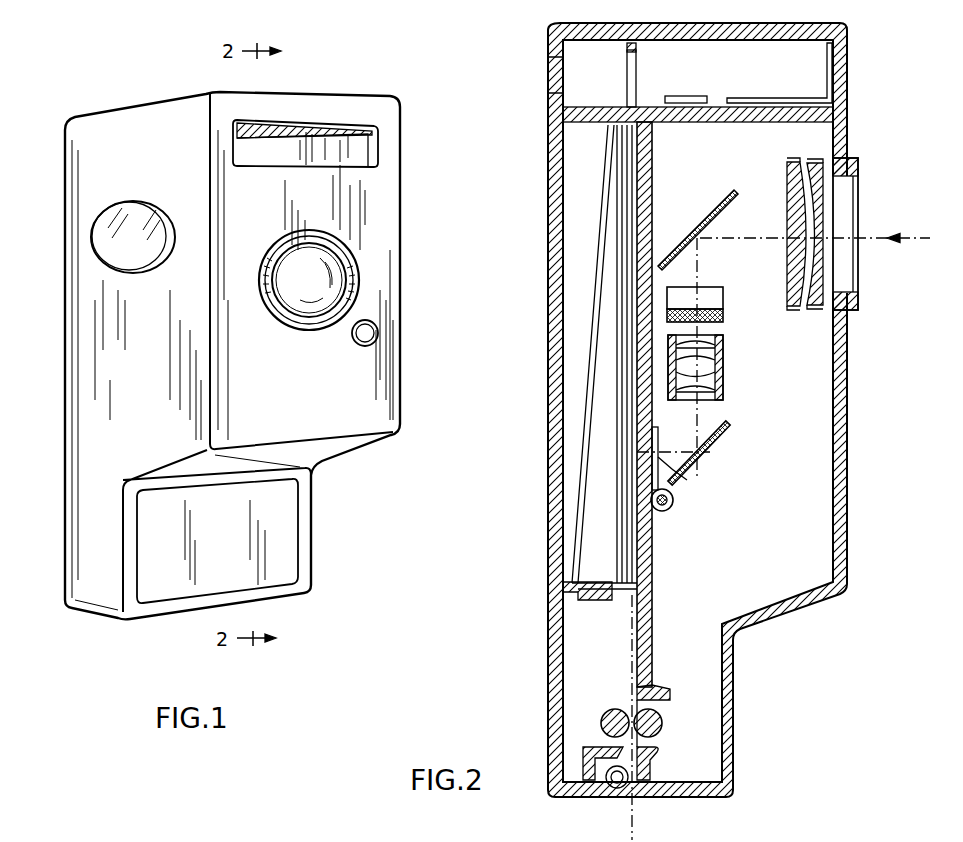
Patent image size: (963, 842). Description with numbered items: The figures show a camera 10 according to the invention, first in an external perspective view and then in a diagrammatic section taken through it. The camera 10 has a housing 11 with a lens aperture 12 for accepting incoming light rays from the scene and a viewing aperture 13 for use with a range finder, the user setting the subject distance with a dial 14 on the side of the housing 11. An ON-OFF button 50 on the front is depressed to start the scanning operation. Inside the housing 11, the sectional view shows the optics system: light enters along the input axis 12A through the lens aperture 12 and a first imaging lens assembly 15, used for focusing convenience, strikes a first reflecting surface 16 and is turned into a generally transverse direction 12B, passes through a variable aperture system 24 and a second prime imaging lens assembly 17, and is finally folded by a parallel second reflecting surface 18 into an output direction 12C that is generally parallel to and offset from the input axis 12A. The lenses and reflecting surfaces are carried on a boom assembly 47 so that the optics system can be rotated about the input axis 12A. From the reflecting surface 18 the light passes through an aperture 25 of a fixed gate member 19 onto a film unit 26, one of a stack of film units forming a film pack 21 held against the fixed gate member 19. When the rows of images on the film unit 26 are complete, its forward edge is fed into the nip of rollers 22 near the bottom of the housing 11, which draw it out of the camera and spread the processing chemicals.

In FIG. 1, the camera 10 is at (255, 355).
In FIG. 1, the housing 11 is at (402, 277).
In FIG. 2, the housing 11 is at (847, 422).
In FIG. 1, the lens aperture 12 is at (297, 337).
In FIG. 2, the lens aperture 12 is at (862, 198).
In FIG. 2, the input axis 12A is at (912, 240).
In FIG. 2, the transverse direction 12B is at (698, 263).
In FIG. 2, the output direction 12C is at (707, 461).
In FIG. 1, the viewing aperture 13 is at (375, 150).
In FIG. 2, the viewing aperture 13 is at (847, 91).
In FIG. 1, the dial 14 is at (140, 274).
In FIG. 2, the first imaging lens assembly 15 is at (781, 166).
In FIG. 2, the reflecting surface 16 is at (733, 210).
In FIG. 2, the second prime imaging lens assembly 17 is at (740, 347).
In FIG. 2, the reflecting surface 18 is at (713, 427).
In FIG. 2, the fixed gate member 19 is at (647, 607).
In FIG. 2, the film pack 21 is at (607, 542).
In FIG. 2, the rollers 22 is at (668, 727).
In FIG. 2, the variable aperture system 24 is at (723, 316).
In FIG. 2, the aperture 25 is at (683, 480).
In FIG. 2, the film unit 26 is at (640, 522).
In FIG. 2, the boom assembly 47 is at (736, 343).
In FIG. 1, the ON-OFF button 50 is at (363, 346).